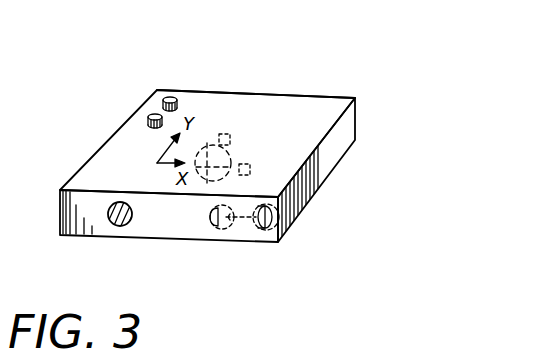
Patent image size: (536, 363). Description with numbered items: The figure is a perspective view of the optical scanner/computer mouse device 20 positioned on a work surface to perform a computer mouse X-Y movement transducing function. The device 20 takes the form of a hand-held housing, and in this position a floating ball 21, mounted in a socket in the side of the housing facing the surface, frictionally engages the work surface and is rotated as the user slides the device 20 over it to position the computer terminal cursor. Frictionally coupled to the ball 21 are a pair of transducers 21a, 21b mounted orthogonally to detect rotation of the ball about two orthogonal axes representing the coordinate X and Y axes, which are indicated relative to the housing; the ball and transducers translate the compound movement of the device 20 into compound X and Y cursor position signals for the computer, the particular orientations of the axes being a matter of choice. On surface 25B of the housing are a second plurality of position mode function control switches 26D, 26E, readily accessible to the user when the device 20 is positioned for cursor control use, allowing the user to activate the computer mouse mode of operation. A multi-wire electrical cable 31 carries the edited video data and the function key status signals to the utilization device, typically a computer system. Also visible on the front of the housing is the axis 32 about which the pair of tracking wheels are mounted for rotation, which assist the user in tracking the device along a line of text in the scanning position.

The optical scanner/computer mouse device 20 is at (345, 184).
The floating ball 21 is at (243, 150).
The transducer 21a is at (252, 170).
The transducer 21b is at (226, 134).
The surface of housing 25B is at (290, 100).
The position mode function control switch 26D is at (165, 100).
The position mode function control switch 26E is at (150, 120).
The multi-wire electrical cable 31 is at (177, 96).
The axis 32 is at (240, 220).